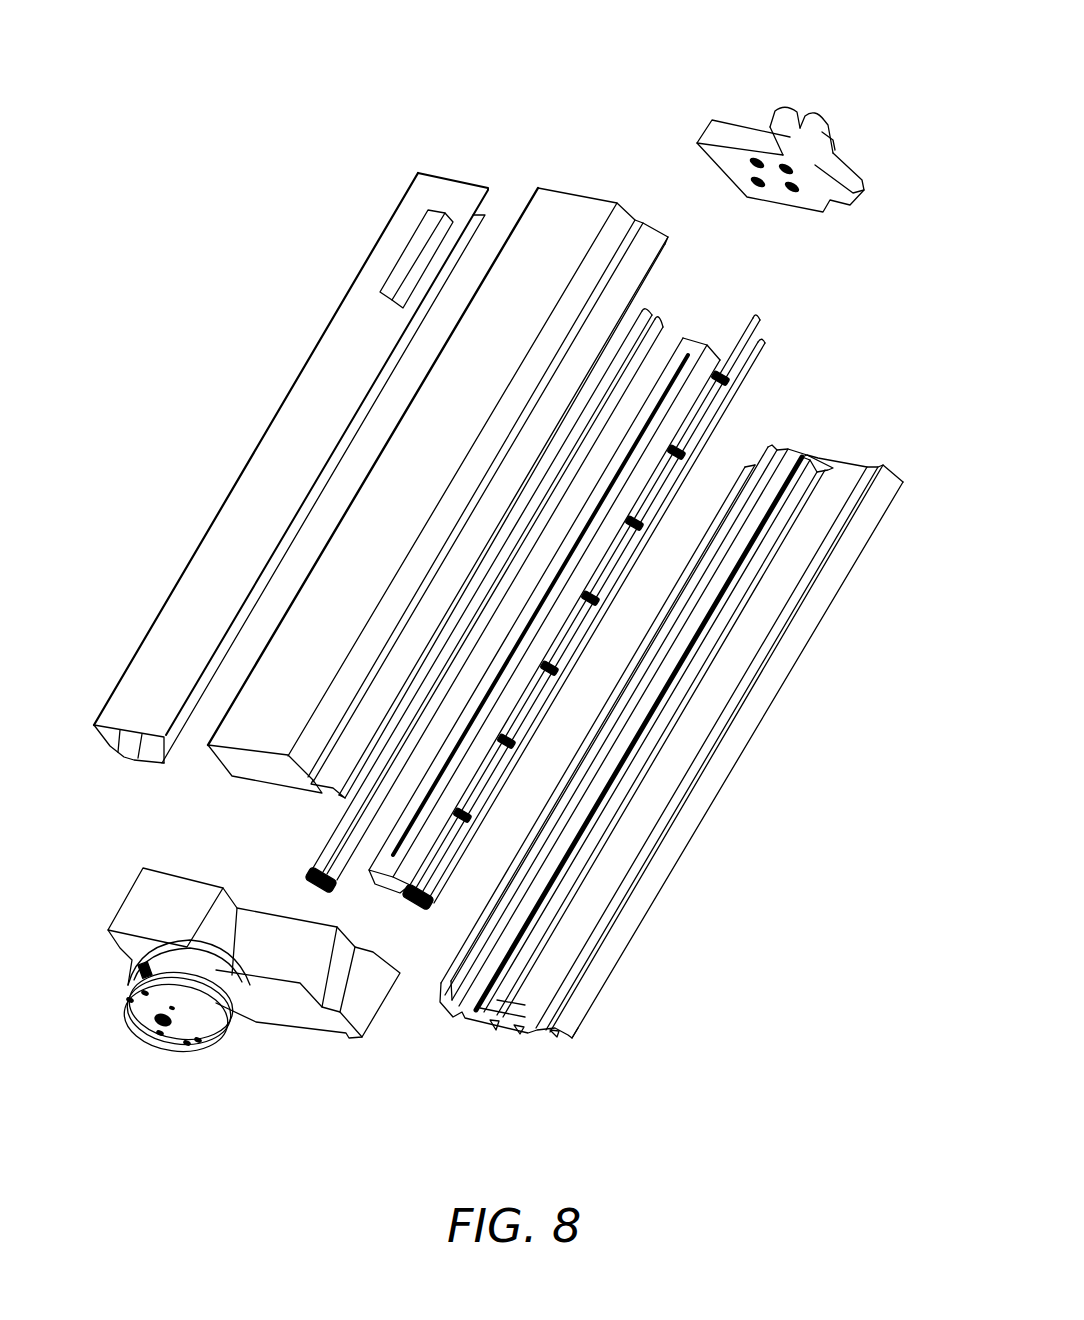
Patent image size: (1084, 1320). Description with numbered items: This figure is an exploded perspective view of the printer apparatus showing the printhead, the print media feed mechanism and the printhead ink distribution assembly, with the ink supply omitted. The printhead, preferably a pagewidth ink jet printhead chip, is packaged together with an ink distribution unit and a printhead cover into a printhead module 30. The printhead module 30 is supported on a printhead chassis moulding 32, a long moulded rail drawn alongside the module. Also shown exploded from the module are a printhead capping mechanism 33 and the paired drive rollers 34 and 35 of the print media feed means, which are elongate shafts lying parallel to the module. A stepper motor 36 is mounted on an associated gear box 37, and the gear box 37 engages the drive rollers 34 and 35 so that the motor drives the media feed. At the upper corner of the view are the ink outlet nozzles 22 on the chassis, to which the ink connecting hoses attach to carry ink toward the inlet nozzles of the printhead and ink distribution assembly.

The ink outlet nozzles 22 is at (813, 127).
The printhead module 30 is at (560, 212).
The printhead chassis moulding 32 is at (820, 457).
The printhead capping mechanism 33 is at (688, 356).
The drive roller 34 is at (432, 915).
The drive roller 35 is at (323, 843).
The stepper motor 36 is at (210, 1002).
The gear box 37 is at (143, 903).